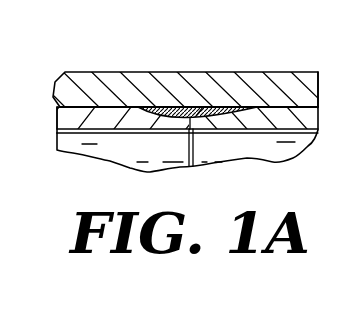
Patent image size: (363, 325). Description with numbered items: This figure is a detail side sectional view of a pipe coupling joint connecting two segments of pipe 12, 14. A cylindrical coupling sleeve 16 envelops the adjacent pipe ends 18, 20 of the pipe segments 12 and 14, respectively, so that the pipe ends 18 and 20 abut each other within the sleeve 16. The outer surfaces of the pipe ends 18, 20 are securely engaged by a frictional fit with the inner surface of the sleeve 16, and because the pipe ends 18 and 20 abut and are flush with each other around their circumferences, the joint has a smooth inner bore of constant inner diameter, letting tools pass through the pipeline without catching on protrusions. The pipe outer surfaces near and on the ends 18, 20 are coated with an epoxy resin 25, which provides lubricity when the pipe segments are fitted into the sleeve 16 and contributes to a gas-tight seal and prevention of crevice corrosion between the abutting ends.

The pipe segment 12 is at (290, 142).
The pipe segment 14 is at (97, 143).
The coupling sleeve 16 is at (139, 84).
The pipe end 18 is at (222, 123).
The pipe end 20 is at (165, 122).
The epoxy resin 25 is at (208, 106).